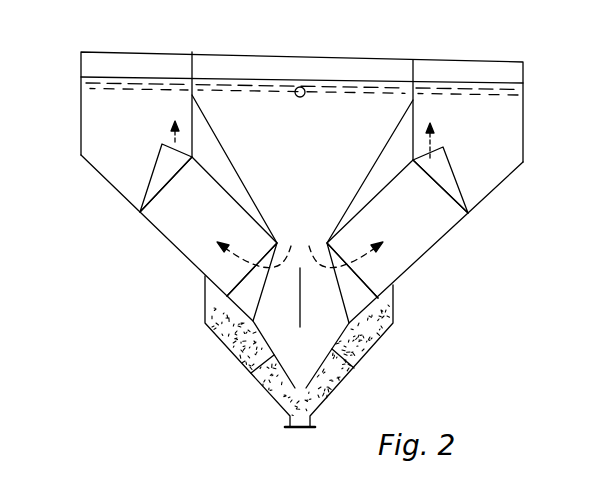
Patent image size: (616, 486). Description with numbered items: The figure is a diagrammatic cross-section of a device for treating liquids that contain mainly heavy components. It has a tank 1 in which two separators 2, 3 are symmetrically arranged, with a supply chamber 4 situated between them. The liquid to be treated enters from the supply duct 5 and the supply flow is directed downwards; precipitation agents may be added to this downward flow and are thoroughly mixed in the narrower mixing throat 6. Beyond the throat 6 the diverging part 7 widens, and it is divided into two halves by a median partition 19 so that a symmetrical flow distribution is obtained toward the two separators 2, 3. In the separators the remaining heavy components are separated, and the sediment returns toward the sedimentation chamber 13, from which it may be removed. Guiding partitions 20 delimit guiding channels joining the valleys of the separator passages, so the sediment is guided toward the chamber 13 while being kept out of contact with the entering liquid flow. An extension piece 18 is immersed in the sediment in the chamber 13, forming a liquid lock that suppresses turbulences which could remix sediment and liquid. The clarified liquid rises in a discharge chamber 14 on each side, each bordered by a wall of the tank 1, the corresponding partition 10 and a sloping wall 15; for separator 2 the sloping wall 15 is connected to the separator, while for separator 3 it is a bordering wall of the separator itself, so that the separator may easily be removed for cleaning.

The tank 1 is at (110, 184).
The separator 2 is at (206, 228).
The separator 3 is at (414, 222).
The supply chamber 4 is at (309, 138).
The supply duct 5 is at (302, 87).
The throat 6 is at (300, 246).
The diverging part 7 is at (321, 317).
The partition 10 is at (195, 62).
The sedimentation chamber 13 is at (343, 380).
The discharge chamber 14 is at (132, 137).
The sloping wall 15 is at (232, 164).
The extension piece 18 is at (255, 372).
The median partition 19 is at (303, 326).
The guiding partition 20 is at (260, 300).